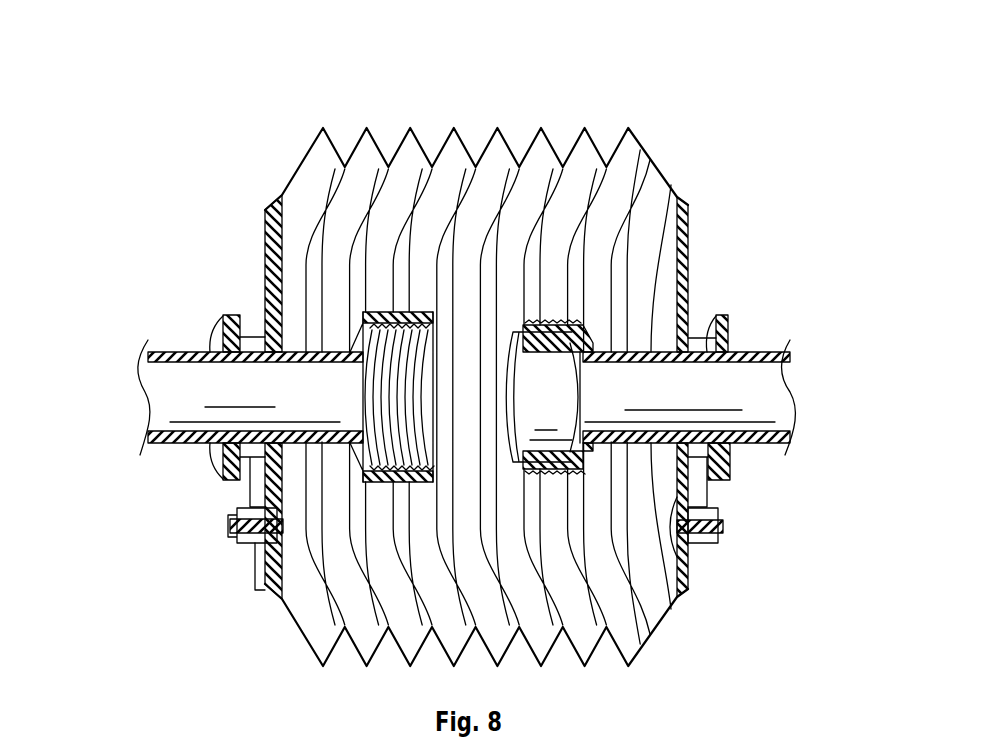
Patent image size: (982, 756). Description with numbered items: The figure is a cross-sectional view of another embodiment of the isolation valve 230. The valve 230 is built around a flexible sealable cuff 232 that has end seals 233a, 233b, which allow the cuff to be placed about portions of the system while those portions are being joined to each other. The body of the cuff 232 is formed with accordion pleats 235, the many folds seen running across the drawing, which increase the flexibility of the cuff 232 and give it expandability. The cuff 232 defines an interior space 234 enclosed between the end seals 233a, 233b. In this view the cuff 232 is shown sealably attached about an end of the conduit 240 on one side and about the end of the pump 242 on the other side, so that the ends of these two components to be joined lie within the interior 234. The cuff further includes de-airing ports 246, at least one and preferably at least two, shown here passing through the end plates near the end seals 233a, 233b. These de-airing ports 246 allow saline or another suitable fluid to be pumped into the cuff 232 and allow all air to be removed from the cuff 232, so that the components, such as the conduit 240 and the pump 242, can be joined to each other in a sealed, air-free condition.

The isolation valve 230 is at (518, 104).
The flexible sealable cuff 232 is at (365, 127).
The interior space 234 is at (528, 188).
The accordion pleats 235 is at (577, 118).
The conduit 240 is at (290, 385).
The pump 242 is at (747, 383).
The end seal 233a is at (230, 333).
The end seal 233b is at (725, 331).
The de-airing port 246 is at (232, 529).